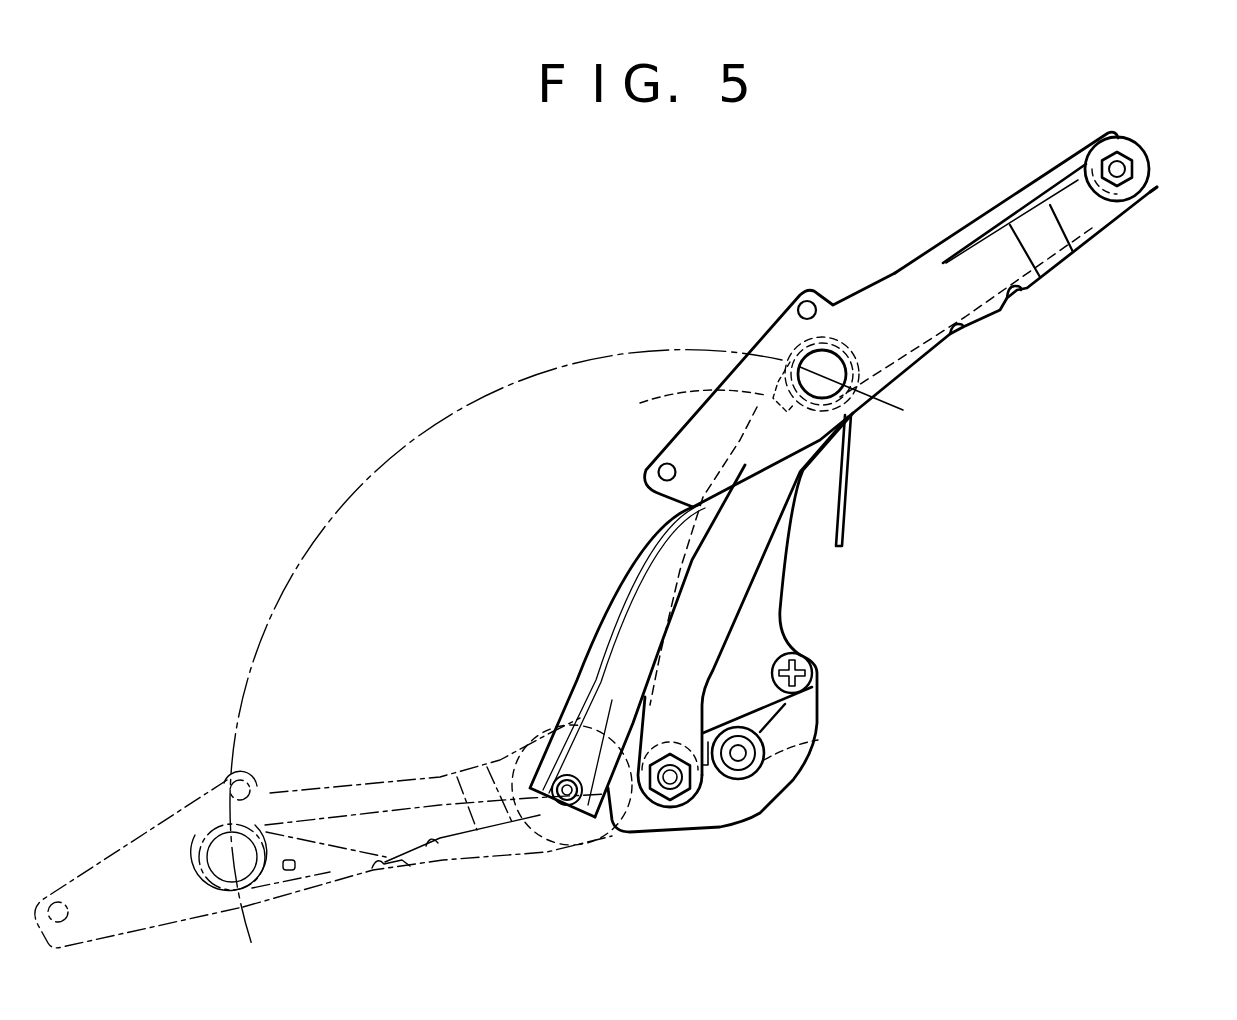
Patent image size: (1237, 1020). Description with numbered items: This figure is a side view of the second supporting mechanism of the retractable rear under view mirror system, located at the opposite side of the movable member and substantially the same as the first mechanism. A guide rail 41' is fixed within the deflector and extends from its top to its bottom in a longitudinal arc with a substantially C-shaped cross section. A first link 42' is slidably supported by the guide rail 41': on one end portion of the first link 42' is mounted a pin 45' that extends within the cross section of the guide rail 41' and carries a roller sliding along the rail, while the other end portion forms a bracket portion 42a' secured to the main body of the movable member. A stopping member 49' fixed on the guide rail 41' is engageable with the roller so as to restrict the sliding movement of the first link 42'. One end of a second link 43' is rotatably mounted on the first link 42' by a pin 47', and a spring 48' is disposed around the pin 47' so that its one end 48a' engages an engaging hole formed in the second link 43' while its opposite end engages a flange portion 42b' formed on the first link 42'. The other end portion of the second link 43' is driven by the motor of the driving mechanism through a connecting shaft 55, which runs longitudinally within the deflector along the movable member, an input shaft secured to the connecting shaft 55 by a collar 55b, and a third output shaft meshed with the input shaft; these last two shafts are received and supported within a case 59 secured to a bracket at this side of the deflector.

The guide rail 41' is at (1006, 202).
The first link 42' is at (925, 347).
The bracket portion 42a' is at (770, 384).
The flange portion 42b' is at (1003, 348).
The second link 43' is at (737, 619).
The pin 45' is at (1119, 204).
The pin 47' is at (843, 428).
The spring 48' is at (825, 318).
The spring end 48a' is at (764, 474).
The stopping member 49' is at (628, 689).
The connecting shaft 55 is at (745, 782).
The collar 55b is at (770, 740).
The case 59 is at (787, 767).